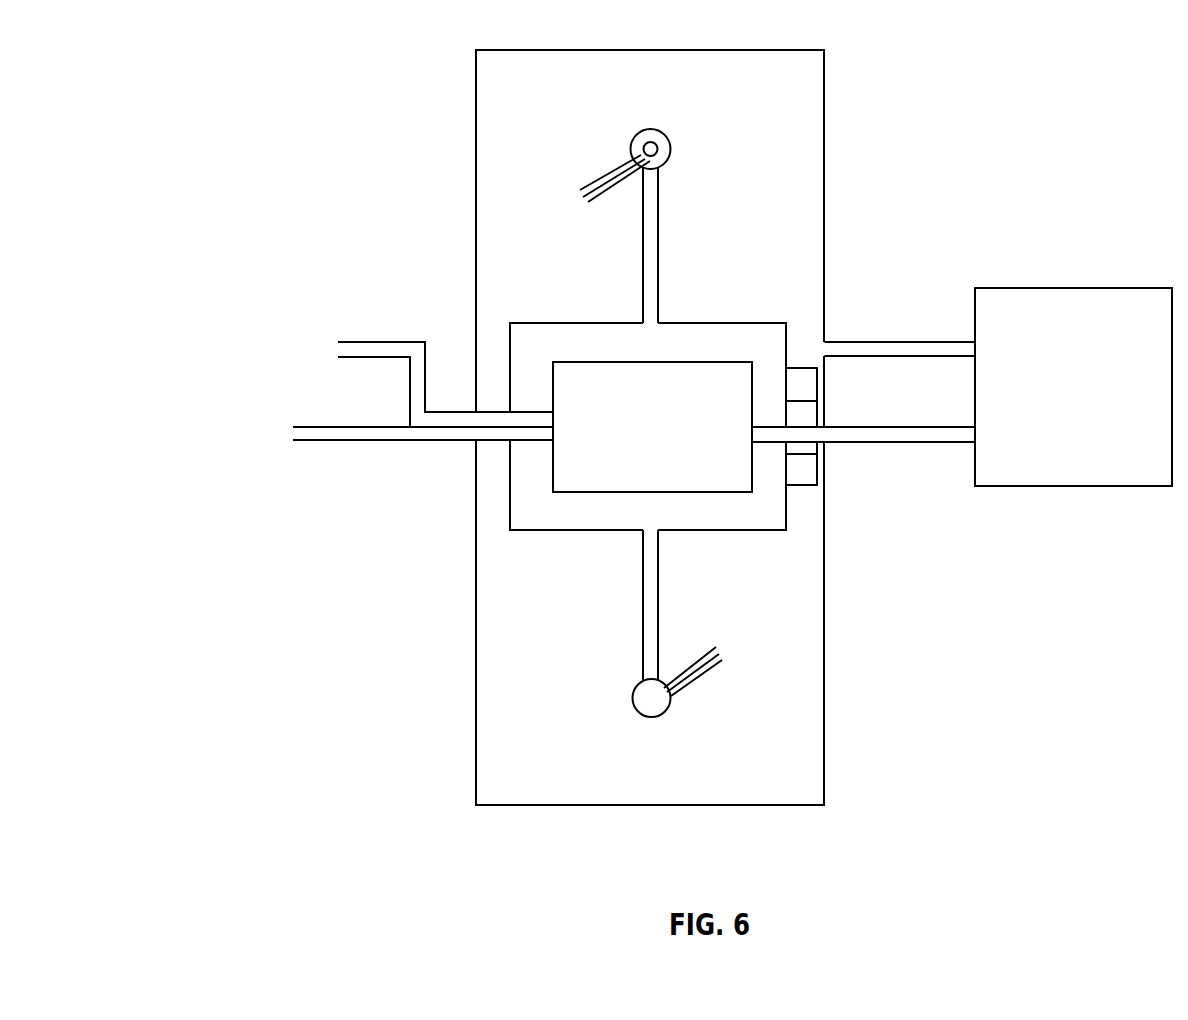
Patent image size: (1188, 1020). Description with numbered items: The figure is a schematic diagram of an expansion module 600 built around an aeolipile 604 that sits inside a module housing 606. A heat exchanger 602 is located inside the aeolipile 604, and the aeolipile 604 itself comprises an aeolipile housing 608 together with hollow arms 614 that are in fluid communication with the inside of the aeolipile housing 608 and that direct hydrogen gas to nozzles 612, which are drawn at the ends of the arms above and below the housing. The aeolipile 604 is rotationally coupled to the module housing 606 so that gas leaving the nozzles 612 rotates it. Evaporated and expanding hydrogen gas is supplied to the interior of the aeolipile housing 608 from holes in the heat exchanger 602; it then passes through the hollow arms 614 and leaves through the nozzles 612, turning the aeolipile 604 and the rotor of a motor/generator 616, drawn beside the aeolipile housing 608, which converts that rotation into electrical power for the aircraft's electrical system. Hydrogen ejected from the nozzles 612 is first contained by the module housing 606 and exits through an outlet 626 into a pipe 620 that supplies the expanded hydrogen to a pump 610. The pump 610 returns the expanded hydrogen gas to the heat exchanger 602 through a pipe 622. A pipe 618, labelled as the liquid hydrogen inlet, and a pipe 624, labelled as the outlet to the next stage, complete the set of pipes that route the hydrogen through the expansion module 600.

The expansion module 600 is at (942, 88).
The heat exchanger 602 is at (663, 442).
The aeolipile 604 is at (618, 235).
The module housing 606 is at (476, 199).
The aeolipile housing 608 is at (560, 531).
The pump 610 is at (1089, 398).
The nozzles 612 is at (632, 142).
The hollow arms 614 is at (658, 278).
The motor/generator 616 is at (798, 487).
The pipe 618 is at (388, 341).
The pipe 620 is at (931, 340).
The pipe 622 is at (905, 443).
The pipe 624 is at (340, 443).
The outlet 626 is at (826, 337).